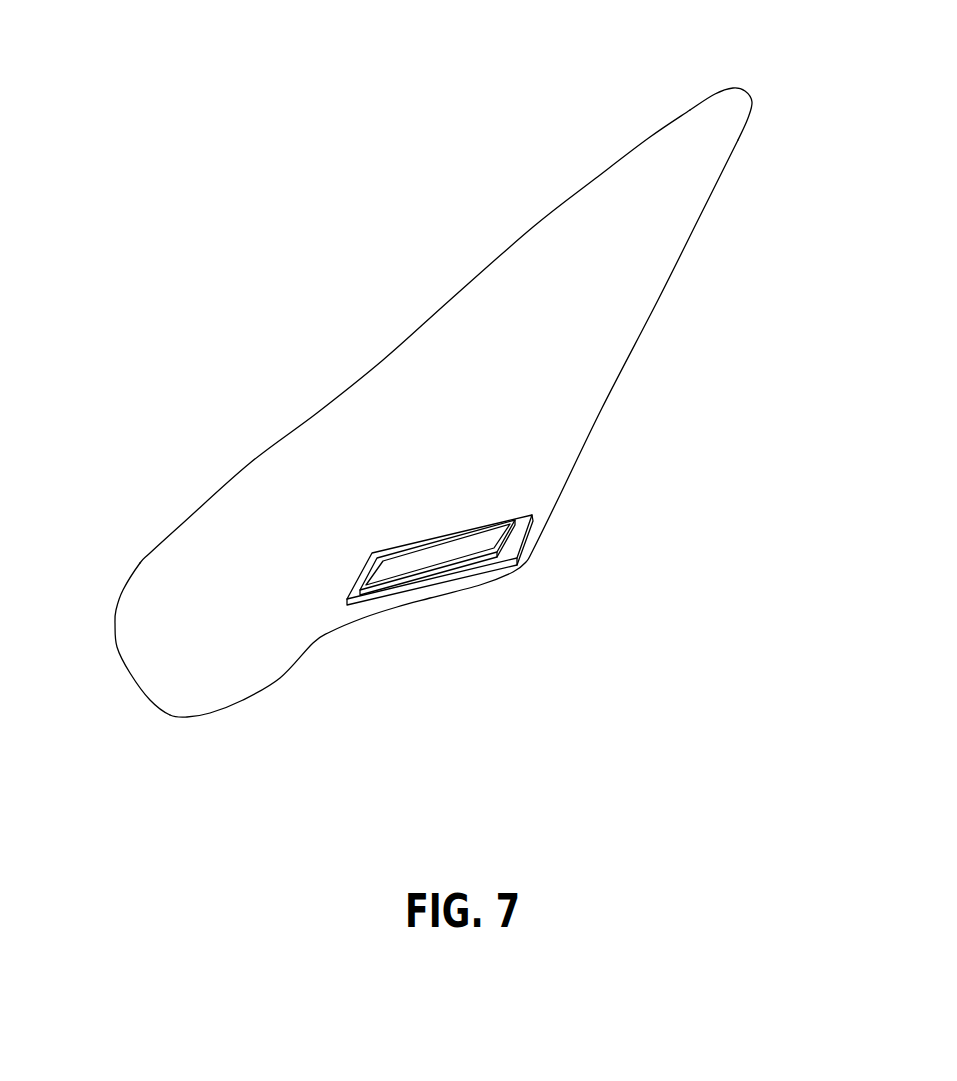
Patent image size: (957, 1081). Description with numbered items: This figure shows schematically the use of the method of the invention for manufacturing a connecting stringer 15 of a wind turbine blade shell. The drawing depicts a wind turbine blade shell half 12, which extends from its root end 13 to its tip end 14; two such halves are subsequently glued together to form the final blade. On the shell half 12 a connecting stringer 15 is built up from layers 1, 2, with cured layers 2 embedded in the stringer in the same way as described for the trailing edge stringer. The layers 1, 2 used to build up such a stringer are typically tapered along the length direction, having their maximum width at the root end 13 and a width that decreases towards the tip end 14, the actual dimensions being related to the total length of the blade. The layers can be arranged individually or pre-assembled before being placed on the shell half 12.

The layer 1 is at (505, 540).
The cured layer 2 is at (510, 527).
The wind turbine blade shell half 12 is at (640, 358).
The root end 13 is at (150, 703).
The tip end 14 is at (752, 92).
The connecting stringer 15 is at (427, 550).